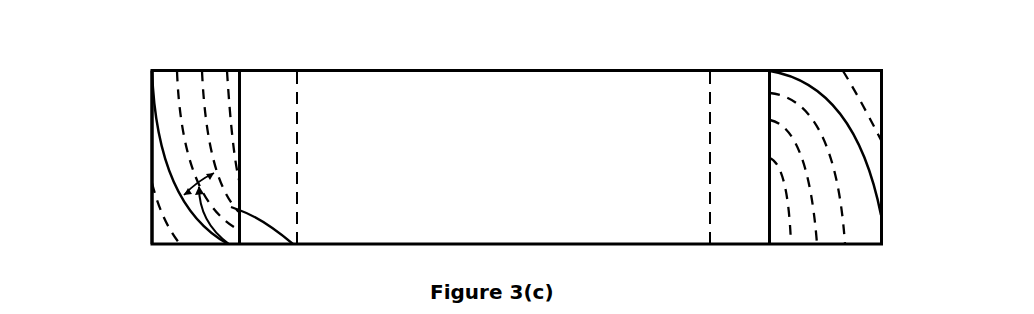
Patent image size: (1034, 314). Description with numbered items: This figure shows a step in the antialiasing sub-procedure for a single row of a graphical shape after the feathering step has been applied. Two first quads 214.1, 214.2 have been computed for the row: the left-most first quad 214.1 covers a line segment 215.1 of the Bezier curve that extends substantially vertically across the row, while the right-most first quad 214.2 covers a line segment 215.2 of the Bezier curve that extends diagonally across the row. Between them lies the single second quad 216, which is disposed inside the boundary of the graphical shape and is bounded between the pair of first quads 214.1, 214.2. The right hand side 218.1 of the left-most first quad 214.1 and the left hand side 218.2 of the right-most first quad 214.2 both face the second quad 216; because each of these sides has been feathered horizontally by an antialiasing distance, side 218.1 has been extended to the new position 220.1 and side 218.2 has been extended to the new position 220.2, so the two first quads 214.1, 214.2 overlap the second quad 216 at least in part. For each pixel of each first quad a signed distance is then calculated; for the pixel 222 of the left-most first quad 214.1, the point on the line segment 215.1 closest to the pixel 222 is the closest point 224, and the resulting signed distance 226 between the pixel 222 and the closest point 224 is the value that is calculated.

The first quad 214.1 is at (152, 189).
The first quad 214.2 is at (883, 105).
The line segment 215.1 is at (160, 152).
The line segment 215.2 is at (830, 97).
The second quad 216 is at (526, 168).
The right hand side 218.1 is at (239, 90).
The left hand side 218.2 is at (770, 92).
The new position 220.1 is at (297, 110).
The new position 220.2 is at (710, 108).
The pixel 222 is at (293, 244).
The closest point 224 is at (184, 196).
The signed distance 226 is at (230, 246).